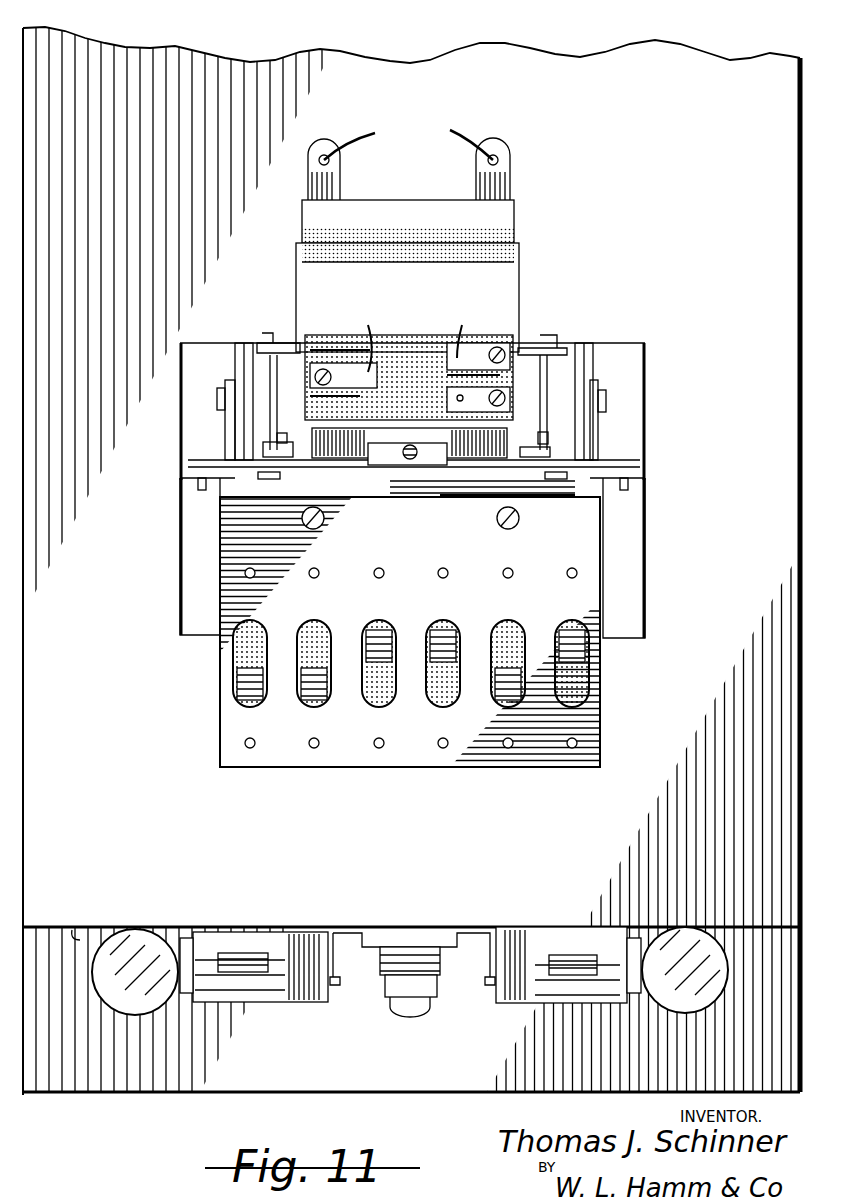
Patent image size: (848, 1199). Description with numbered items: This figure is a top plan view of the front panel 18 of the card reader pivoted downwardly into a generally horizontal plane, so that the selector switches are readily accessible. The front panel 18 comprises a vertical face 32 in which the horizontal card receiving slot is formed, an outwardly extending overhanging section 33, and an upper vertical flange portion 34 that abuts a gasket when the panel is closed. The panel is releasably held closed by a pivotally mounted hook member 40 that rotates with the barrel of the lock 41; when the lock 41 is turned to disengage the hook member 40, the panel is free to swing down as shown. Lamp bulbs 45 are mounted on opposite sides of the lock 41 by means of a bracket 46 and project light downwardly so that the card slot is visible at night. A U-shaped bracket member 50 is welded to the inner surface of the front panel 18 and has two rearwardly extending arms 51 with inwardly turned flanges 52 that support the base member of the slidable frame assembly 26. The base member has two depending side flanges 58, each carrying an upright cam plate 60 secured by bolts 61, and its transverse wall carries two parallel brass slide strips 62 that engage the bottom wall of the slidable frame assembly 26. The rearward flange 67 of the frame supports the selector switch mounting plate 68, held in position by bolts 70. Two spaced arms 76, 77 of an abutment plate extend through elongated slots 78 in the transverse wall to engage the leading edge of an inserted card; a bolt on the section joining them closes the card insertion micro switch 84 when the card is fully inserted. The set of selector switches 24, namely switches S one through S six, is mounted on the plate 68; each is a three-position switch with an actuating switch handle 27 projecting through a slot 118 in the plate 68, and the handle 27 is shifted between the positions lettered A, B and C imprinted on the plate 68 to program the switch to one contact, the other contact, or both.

The front panel 18 is at (585, 98).
The set of selector switches 24 is at (418, 653).
The slidable frame assembly 26 is at (208, 490).
The switch handle 27 is at (242, 690).
The vertical face 32 is at (88, 78).
The overhanging section 33 is at (80, 928).
The upper vertical flange portion 34 is at (80, 1092).
The hook member 40 is at (388, 990).
The lock 41 is at (402, 960).
The lamp bulb 45 is at (133, 952).
The bracket 46 is at (468, 930).
The U-shaped bracket member 50 is at (652, 460).
The rearwardly extending arm 51 is at (178, 574).
The inwardly turned flange 52 is at (192, 486).
The depending side flange 58 is at (248, 348).
The upright cam plate 60 is at (226, 384).
The bolt 61 is at (217, 399).
The brass slide strip 62 is at (282, 478).
The rearward flange 67 is at (392, 484).
The selector switch mounting plate 68 is at (540, 745).
The bolt 70 is at (325, 518).
The arm 76 is at (445, 482).
The arm 77 is at (352, 470).
The elongated slot 78 is at (386, 468).
The card insertion micro switch 84 is at (412, 350).
The slot 118 is at (235, 656).